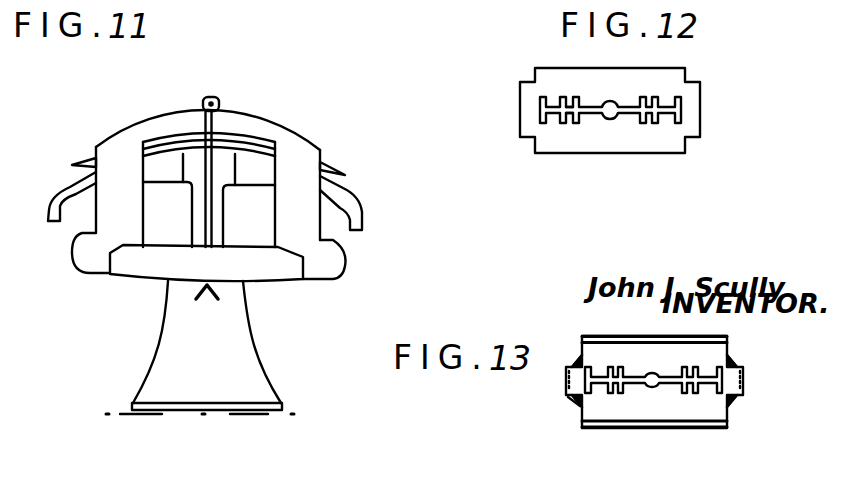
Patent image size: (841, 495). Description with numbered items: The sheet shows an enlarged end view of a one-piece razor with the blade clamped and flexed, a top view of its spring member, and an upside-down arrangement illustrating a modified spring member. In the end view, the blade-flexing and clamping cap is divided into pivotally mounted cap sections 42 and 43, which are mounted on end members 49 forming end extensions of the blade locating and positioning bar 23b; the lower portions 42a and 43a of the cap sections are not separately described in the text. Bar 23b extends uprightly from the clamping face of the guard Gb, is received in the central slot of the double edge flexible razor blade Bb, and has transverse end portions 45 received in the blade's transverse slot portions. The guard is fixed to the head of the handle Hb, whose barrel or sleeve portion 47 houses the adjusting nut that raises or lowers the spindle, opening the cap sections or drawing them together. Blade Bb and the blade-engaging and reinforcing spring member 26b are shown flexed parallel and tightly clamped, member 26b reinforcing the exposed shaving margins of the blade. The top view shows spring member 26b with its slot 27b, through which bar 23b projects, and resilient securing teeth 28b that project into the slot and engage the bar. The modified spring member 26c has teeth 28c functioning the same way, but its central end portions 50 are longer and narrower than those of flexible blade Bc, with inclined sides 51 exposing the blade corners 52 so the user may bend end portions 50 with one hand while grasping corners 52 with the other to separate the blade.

In FIG. 11, the cap section 42 is at (133, 127).
In FIG. 11, the cap section 43 is at (295, 132).
In FIG. 11, the transverse end portions 45 is at (238, 157).
In FIG. 11, the blade locating and positioning bar 23b is at (210, 96).
In FIG. 11, the double edge flexible razor blade Bb is at (87, 157).
In FIG. 11, the left guard arm 42a is at (96, 210).
In FIG. 11, the blade-engaging and reinforcing spring member 26b is at (343, 177).
In FIG. 12, the blade-engaging and reinforcing spring member 26b is at (700, 101).
In FIG. 11, the guard Gb is at (367, 221).
In FIG. 11, the right guard arm 43a is at (320, 218).
In FIG. 11, the end members 49 is at (132, 274).
In FIG. 11, the barrel or sleeve portion 47 is at (267, 388).
In FIG. 11, the handle Hb is at (146, 387).
In FIG. 12, the slot 27b is at (550, 110).
In FIG. 12, the resilient securing teeth 28b is at (570, 114).
In FIG. 13, the spring member 26c is at (733, 400).
In FIG. 13, the teeth 28c is at (614, 385).
In FIG. 13, the central end portions 50 is at (564, 380).
In FIG. 13, the sides 51 is at (572, 398).
In FIG. 13, the corners 52 is at (730, 358).
In FIG. 13, the flexible blade Bc is at (578, 355).